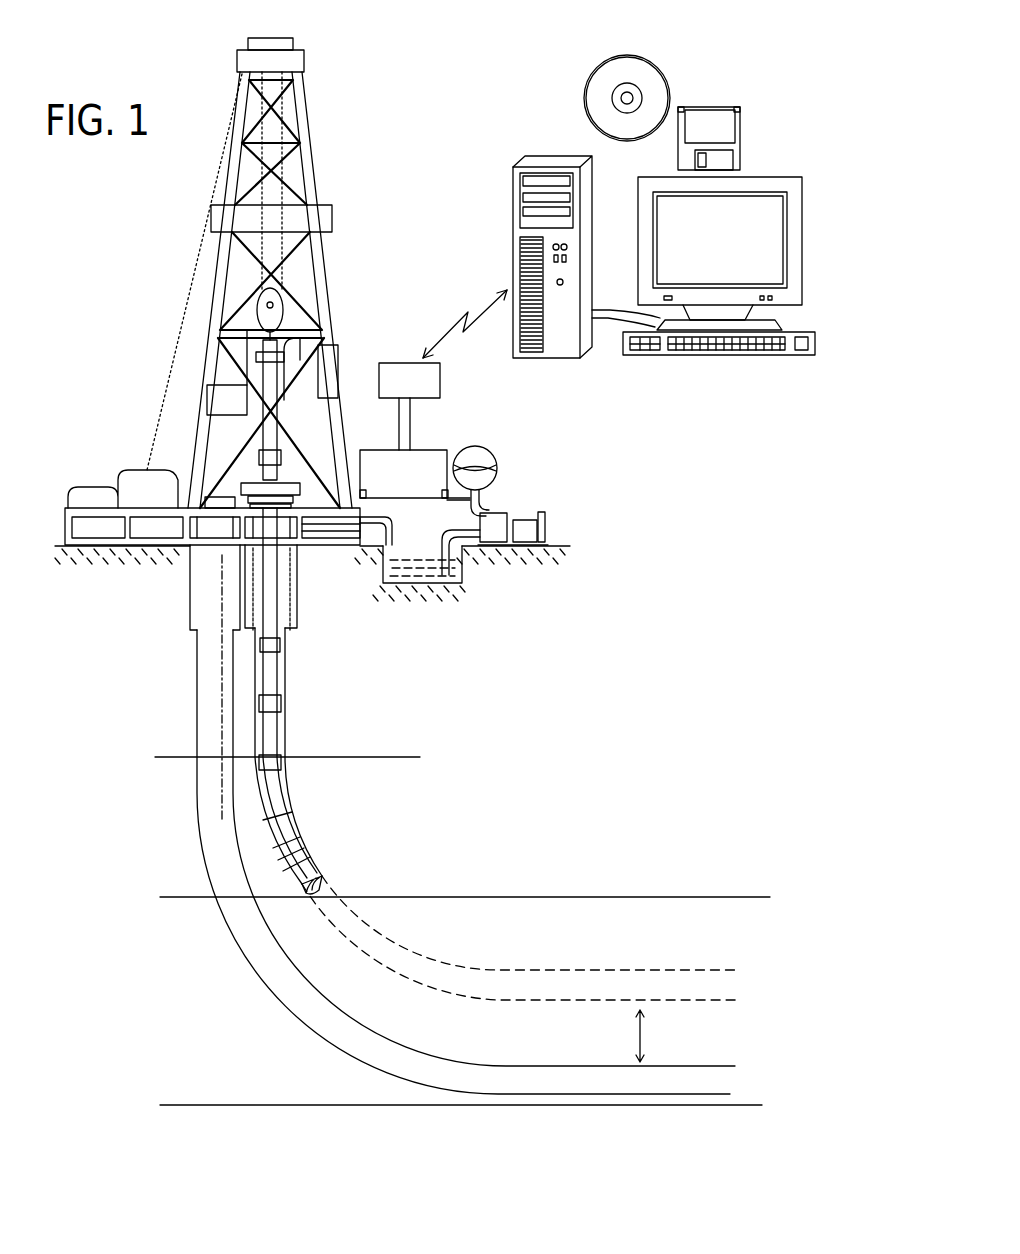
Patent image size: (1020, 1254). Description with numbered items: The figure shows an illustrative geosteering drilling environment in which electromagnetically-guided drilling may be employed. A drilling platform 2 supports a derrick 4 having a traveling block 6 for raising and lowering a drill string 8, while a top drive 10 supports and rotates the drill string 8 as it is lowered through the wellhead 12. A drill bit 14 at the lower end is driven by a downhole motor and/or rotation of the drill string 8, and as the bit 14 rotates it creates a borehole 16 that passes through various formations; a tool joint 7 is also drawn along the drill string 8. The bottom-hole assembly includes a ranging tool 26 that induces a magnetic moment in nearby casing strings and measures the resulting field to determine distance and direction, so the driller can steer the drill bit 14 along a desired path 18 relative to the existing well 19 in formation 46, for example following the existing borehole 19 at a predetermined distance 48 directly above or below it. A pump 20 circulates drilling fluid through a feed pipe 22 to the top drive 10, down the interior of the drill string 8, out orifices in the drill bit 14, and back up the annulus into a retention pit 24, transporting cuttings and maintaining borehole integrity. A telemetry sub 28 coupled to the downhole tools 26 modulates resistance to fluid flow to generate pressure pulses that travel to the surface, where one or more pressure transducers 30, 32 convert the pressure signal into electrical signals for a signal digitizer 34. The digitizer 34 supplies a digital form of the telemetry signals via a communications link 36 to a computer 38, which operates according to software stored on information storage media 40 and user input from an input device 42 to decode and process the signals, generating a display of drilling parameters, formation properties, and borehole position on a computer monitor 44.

The drilling platform 2 is at (66, 510).
The derrick 4 is at (313, 172).
The traveling block 6 is at (283, 300).
The tool joint 7 is at (280, 645).
The drill string 8 is at (282, 678).
The top drive 10 is at (272, 375).
The wellhead 12 is at (250, 485).
The drill bit 14 is at (316, 863).
The borehole 16 is at (288, 734).
The desired path 18 is at (418, 955).
The existing well 19 is at (333, 1060).
The pump 20 is at (497, 520).
The feed pipe 22 is at (455, 502).
The retention pit 24 is at (395, 570).
The ranging tool 26 is at (300, 846).
The telemetry sub 28 is at (298, 822).
The pressure transducer 30 is at (364, 492).
The pressure transducer 32 is at (443, 492).
The signal digitizer 34 is at (387, 393).
The communications link 36 is at (465, 324).
The computer 38 is at (591, 280).
The information storage media 40 is at (694, 107).
The input device 42 is at (797, 355).
The computer monitor 44 is at (790, 305).
The formation 46 is at (171, 1033).
The predetermined distance 48 is at (630, 1036).